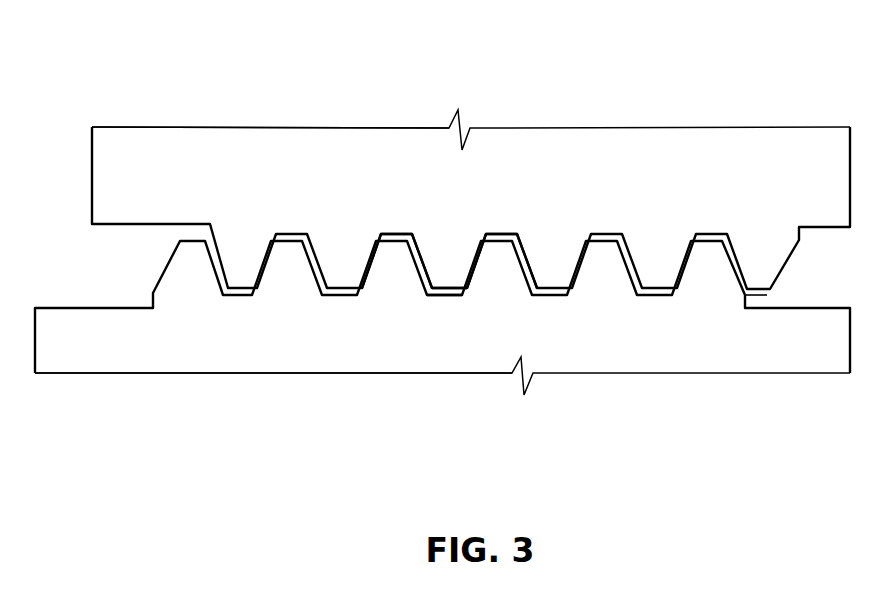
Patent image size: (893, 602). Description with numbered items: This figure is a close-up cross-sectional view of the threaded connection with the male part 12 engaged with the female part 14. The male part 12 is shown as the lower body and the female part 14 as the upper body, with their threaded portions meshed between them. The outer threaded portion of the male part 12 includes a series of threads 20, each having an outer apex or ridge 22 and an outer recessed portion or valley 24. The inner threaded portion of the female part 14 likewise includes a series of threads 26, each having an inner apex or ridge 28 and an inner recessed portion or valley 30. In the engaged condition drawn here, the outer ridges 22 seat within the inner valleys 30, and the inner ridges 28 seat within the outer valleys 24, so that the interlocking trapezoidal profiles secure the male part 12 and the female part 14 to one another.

The male part 12 is at (569, 365).
The female part 14 is at (633, 127).
The threads 20 is at (319, 413).
The outer apex or ridge 22 is at (503, 245).
The outer recessed portion or valley 24 is at (447, 292).
The threads 26 is at (333, 118).
The inner apex or ridge 28 is at (446, 287).
The inner recessed portion or valley 30 is at (393, 233).